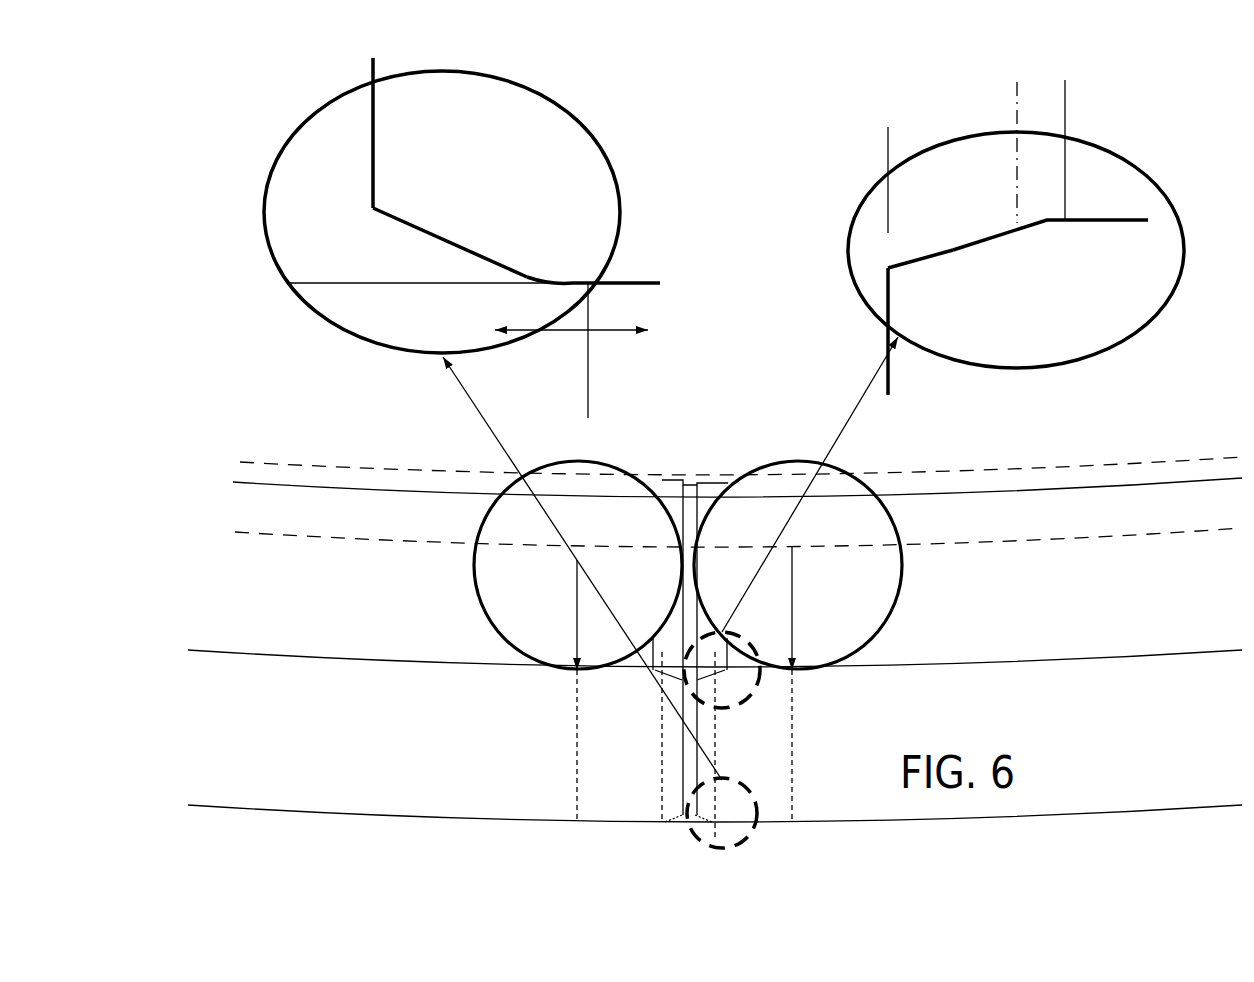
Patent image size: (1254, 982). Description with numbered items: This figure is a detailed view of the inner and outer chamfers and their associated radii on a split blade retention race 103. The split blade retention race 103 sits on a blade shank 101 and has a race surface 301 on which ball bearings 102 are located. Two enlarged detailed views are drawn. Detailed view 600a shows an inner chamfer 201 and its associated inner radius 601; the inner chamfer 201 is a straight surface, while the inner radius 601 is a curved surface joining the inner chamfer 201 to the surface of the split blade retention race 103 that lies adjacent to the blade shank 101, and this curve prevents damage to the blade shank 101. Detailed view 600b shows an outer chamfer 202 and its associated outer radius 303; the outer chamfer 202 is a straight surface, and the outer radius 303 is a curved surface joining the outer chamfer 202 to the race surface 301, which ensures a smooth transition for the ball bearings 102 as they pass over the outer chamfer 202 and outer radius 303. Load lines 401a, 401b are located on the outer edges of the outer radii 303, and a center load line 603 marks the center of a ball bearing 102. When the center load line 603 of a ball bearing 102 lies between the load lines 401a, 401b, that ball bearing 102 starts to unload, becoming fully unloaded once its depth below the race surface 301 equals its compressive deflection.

The blade shank 101 is at (262, 820).
The ball bearing 102 is at (688, 641).
The split blade retention race 103 is at (715, 691).
The inner chamfer 201 is at (428, 233).
The outer chamfer 202 is at (953, 247).
The race surface 301 is at (737, 537).
The outer radius 303 is at (1052, 212).
The load line 401a is at (660, 727).
The load line 401b is at (717, 748).
The detailed view 600a is at (481, 238).
The detailed view 600b is at (1005, 231).
The inner radius 601 is at (527, 277).
The center load line 603 is at (793, 695).